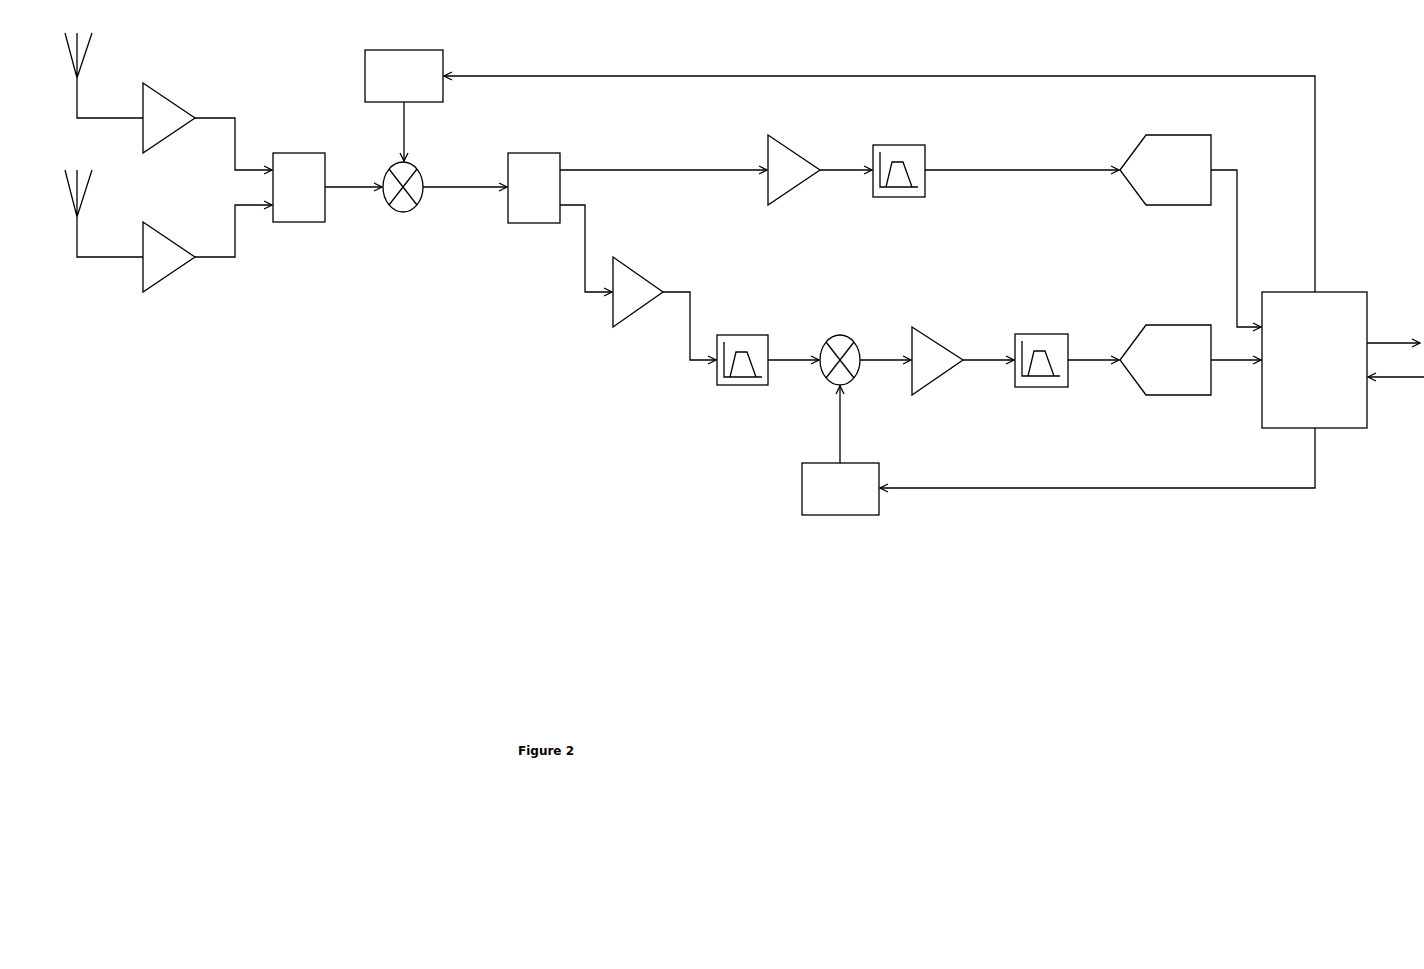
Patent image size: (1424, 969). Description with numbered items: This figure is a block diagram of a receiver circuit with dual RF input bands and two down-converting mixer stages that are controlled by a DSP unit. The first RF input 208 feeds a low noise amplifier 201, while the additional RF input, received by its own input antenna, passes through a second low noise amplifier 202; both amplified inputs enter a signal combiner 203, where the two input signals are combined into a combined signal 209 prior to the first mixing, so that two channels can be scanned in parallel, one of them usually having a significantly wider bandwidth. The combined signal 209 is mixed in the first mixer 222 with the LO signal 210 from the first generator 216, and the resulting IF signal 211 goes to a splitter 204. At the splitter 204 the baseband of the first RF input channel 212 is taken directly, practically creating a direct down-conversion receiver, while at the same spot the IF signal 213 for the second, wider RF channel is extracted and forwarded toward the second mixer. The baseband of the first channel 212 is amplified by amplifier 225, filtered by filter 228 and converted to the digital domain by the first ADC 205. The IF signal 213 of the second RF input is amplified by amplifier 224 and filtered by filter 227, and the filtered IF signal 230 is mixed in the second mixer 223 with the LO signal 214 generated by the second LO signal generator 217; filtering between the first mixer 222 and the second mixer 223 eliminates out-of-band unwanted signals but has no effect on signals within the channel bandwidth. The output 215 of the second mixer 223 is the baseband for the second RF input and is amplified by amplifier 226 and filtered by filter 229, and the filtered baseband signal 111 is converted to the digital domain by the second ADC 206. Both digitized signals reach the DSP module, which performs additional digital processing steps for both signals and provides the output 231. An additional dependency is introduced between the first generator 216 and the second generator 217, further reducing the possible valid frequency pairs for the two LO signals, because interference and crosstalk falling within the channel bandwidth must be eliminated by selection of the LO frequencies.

The first antenna signal line 208 is at (104, 75).
The first low noise amplifier LNA1 201 is at (207, 126).
The low noise amplifier 202 is at (207, 249).
The signal combiner 203 is at (299, 196).
The combined signal 209 is at (353, 179).
The first mixer 222 is at (403, 196).
The generator 1 216 is at (418, 76).
The first local oscillator signal 210 is at (412, 131).
The mixed signal 211 is at (465, 179).
The splitter 204 is at (534, 196).
The baseband of the first RF input channel 212 is at (663, 162).
The IF signal 213 is at (587, 248).
The amplifier 225 is at (820, 171).
The filter 228 is at (996, 180).
The ADC1 205 is at (1190, 231).
The amplifier 224 is at (664, 308).
The filter 227 is at (742, 369).
The filtered signal 230 is at (793, 352).
The second mixer 223 is at (840, 349).
The second local oscillator signal 214 is at (853, 424).
The generator 2 217 is at (1058, 480).
The second mixed signal 215 is at (885, 352).
The amplifier 226 is at (963, 361).
The filter 229 is at (1041, 370).
The filtered signal to ADC2 111 is at (1093, 352).
The ADC2 206 is at (1190, 369).
The output signal 231 is at (1393, 332).